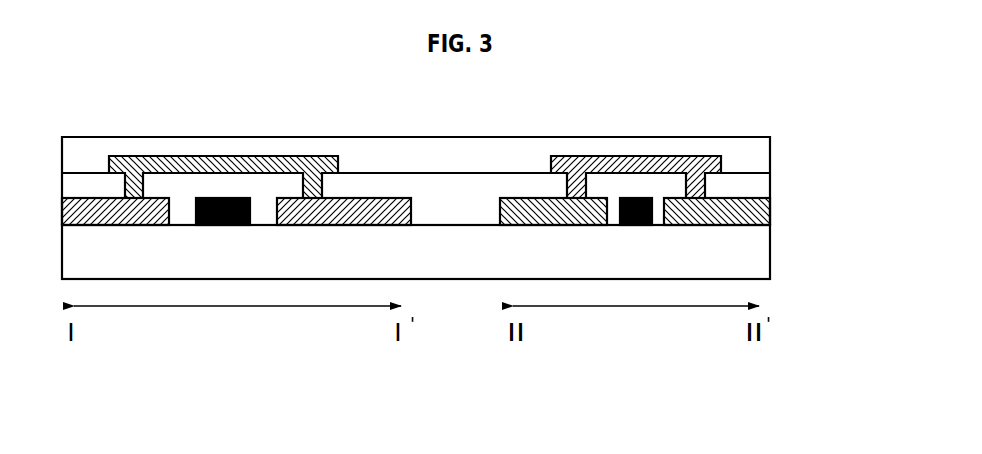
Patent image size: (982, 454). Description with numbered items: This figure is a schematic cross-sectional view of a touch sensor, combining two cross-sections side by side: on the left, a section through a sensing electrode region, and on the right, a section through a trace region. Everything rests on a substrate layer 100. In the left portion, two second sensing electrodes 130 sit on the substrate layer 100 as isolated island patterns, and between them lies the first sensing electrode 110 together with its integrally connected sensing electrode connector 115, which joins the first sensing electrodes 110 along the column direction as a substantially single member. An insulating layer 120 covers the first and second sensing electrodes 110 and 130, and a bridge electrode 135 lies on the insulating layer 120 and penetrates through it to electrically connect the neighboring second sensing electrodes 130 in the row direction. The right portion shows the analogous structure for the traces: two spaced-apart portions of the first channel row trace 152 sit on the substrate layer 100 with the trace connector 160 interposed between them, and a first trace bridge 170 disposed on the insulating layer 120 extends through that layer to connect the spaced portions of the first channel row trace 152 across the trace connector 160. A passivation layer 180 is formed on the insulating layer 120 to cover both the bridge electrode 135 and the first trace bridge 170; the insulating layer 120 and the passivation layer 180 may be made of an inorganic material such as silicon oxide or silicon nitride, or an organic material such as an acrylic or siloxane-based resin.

The substrate layer 100 is at (772, 253).
The first sensing electrode 110 is at (275, 150).
The sensing electrode connector 115 is at (222, 198).
The insulating layer 120 is at (772, 185).
The second sensing electrode 130 is at (100, 198).
The bridge electrode 135 is at (202, 156).
The first channel row trace 152 is at (532, 198).
The trace connector 160 is at (638, 198).
The first trace bridge 170 is at (628, 156).
The passivation layer 180 is at (772, 155).